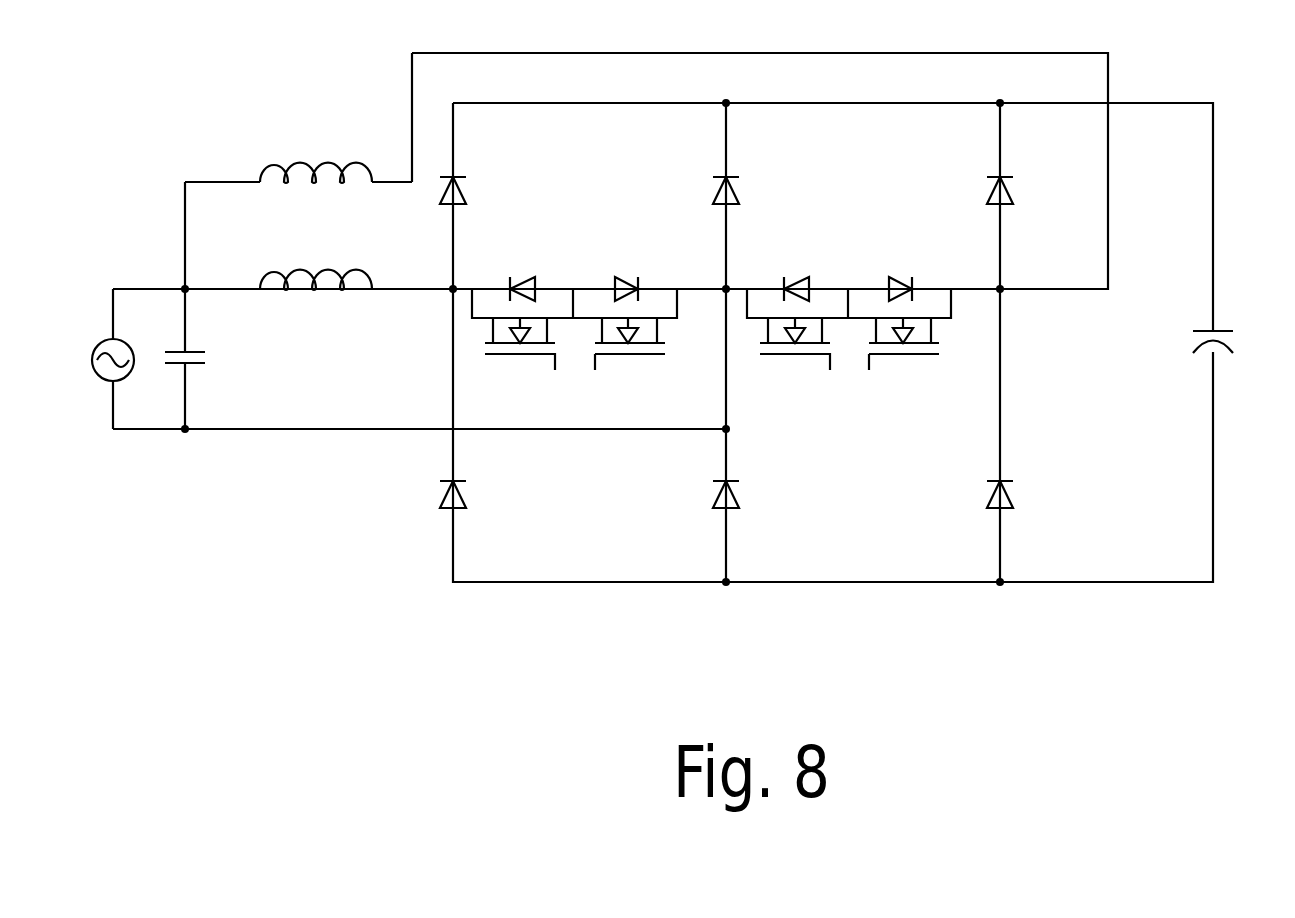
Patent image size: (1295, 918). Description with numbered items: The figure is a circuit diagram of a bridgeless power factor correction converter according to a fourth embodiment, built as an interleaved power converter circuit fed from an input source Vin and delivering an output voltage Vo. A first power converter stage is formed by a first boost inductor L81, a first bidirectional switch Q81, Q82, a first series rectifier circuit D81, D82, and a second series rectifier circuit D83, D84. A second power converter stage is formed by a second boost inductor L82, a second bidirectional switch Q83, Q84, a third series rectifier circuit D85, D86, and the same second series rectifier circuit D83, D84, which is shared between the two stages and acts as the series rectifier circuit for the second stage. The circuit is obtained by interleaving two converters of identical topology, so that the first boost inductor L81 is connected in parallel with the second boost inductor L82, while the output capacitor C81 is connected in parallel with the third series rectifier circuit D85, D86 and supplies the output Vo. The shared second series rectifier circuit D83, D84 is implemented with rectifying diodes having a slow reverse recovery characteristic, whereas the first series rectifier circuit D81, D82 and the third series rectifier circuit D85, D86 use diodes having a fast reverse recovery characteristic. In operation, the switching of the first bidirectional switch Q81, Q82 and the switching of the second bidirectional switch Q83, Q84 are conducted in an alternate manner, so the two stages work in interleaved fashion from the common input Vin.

The first boost inductor L81 is at (316, 256).
The second boost inductor L82 is at (316, 150).
The rectifying diode of first series rectifier circuit D81 is at (490, 196).
The rectifying diode of first series rectifier circuit D82 is at (491, 501).
The rectifying diode of second series rectifier circuit D83 is at (764, 196).
The rectifying diode of second series rectifier circuit D84 is at (765, 501).
The rectifying diode of third series rectifier circuit D85 is at (1038, 196).
The rectifying diode of third series rectifier circuit D86 is at (1039, 499).
The switch of first bidirectional switch Q81 is at (522, 348).
The switch of first bidirectional switch Q82 is at (625, 348).
The switch of second bidirectional switch Q83 is at (797, 348).
The switch of second bidirectional switch Q84 is at (899, 348).
The output capacitor C81 is at (1180, 346).
The input voltage source Vin is at (83, 363).
The output voltage Vo is at (1245, 307).